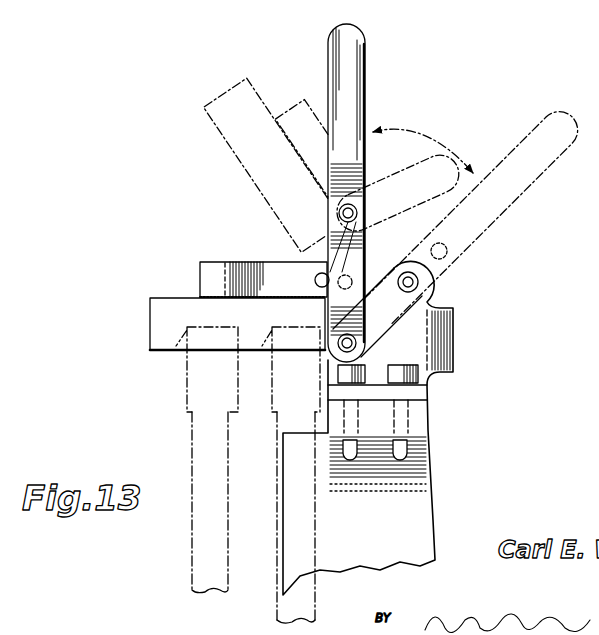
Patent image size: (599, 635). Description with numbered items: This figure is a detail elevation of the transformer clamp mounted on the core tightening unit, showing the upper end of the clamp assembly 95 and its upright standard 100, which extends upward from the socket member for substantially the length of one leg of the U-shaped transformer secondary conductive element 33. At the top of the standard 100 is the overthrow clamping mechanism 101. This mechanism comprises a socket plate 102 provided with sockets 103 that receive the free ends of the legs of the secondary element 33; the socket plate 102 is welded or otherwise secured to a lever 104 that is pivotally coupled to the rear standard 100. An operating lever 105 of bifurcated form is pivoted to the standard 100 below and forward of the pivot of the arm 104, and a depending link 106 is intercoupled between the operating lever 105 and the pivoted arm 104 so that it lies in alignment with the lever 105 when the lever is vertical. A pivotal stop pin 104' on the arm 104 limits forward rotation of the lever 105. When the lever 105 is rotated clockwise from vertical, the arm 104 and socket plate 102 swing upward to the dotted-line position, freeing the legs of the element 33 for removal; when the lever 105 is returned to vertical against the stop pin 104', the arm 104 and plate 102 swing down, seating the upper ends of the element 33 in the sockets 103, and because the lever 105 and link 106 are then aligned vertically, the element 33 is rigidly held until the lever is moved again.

The U-shaped transformer secondary conductive element 33 is at (200, 442).
The clamp assembly 95 is at (439, 509).
The upright standard 100 is at (429, 487).
The overthrow clamping mechanism 101 is at (206, 258).
The socket plate 102 is at (158, 297).
The socket 103 is at (180, 346).
The lever 104 is at (278, 198).
The pivotal stop pin 104' is at (300, 282).
The operating lever 105 is at (355, 72).
The depending link 106 is at (434, 221).